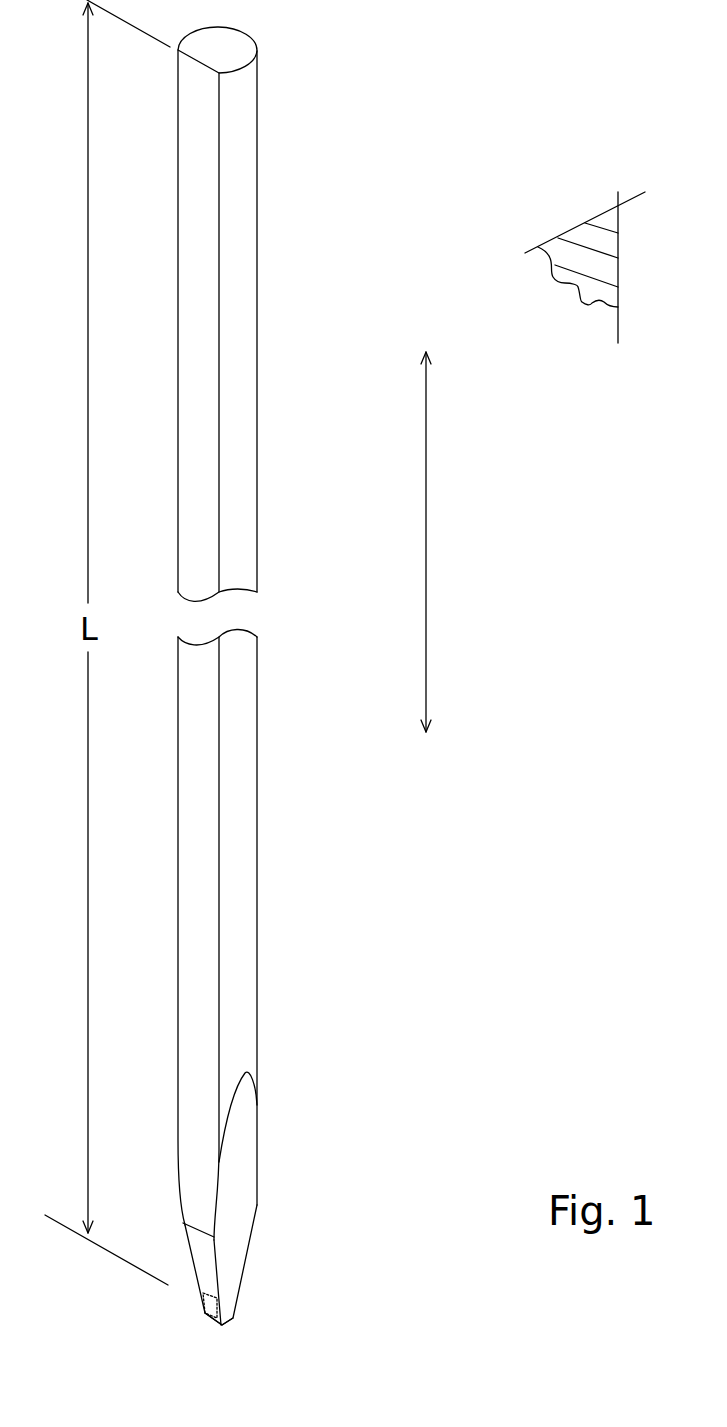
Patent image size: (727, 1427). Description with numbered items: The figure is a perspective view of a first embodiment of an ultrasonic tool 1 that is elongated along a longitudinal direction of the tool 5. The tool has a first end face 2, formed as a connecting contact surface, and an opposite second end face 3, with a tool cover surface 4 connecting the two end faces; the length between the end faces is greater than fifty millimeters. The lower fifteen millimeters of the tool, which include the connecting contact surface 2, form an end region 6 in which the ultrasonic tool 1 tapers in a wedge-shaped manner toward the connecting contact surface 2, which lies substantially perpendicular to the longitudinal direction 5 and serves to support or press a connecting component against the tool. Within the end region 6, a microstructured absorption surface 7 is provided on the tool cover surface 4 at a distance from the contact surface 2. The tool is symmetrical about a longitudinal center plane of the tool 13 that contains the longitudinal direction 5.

The ultrasonic tool 1 is at (281, 682).
The first end face 2 is at (231, 1344).
The second end face 3 is at (233, 52).
The tool cover surface 4 is at (205, 752).
The longitudinal direction of the tool 5 is at (428, 552).
The end region 6 is at (322, 1205).
The microstructured absorption surface 7 is at (213, 1307).
The longitudinal center plane of the tool 13 is at (572, 270).